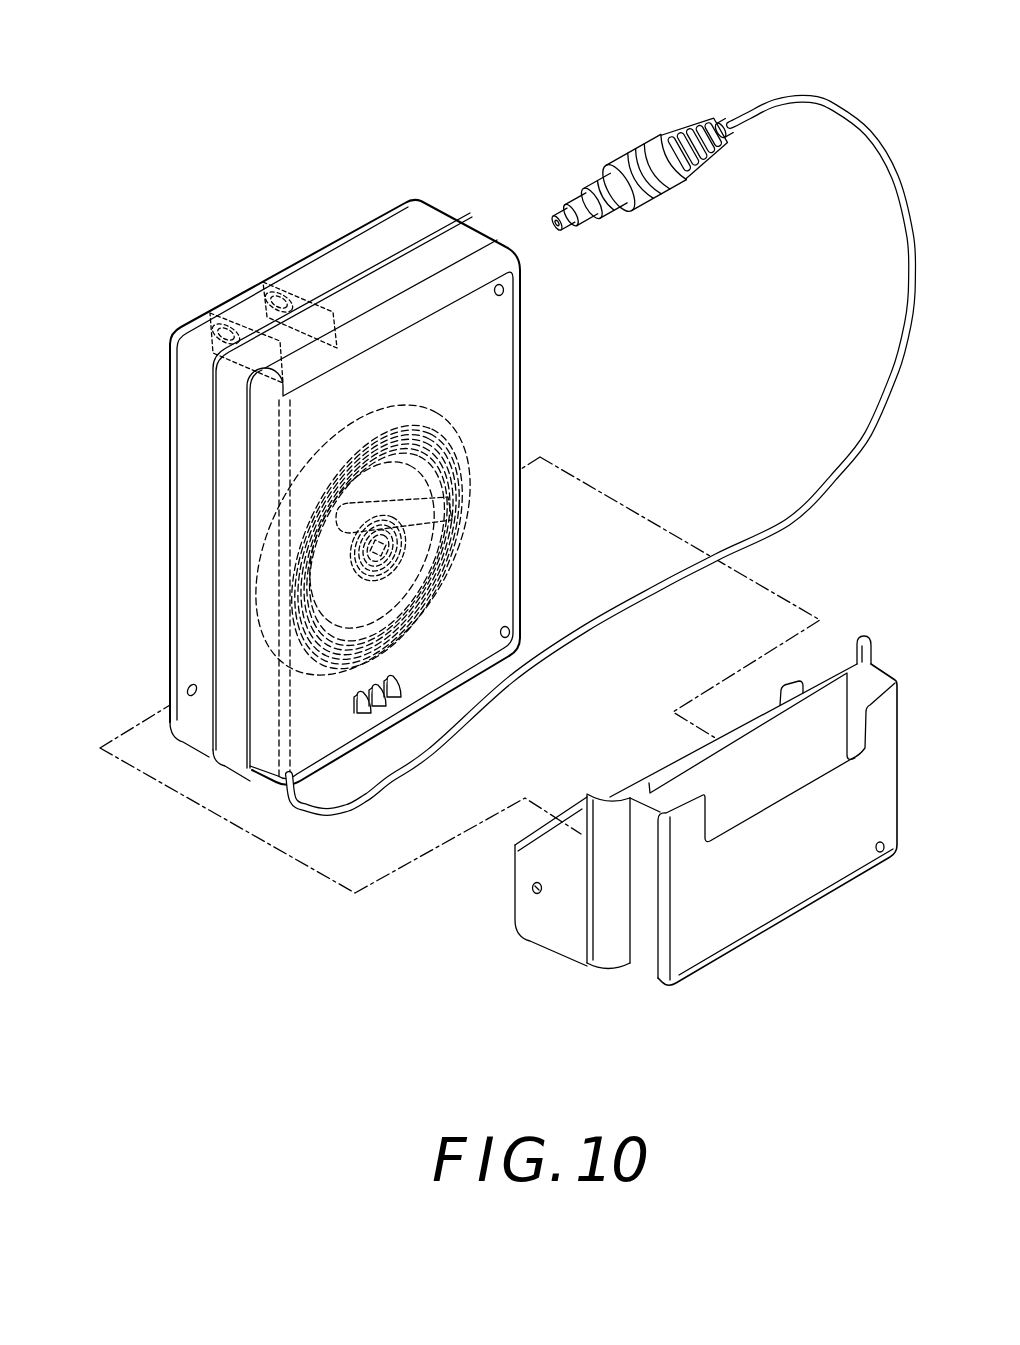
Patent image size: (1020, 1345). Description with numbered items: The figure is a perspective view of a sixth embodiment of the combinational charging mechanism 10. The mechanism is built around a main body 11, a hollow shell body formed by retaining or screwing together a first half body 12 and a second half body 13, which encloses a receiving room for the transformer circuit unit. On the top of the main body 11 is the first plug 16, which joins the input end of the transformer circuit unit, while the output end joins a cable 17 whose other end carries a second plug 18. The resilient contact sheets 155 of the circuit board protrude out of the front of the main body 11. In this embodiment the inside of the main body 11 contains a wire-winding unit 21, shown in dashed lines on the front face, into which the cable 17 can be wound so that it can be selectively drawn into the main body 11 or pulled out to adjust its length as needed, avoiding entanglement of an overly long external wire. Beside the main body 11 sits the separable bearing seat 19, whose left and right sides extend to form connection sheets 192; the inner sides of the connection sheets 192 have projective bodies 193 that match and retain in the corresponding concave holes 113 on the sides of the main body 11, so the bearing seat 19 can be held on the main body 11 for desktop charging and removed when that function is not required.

The combinational charging mechanism 10 is at (357, 101).
The main body 11 is at (270, 203).
The first half body 12 is at (330, 262).
The second half body 13 is at (476, 240).
The first plug 16 is at (212, 315).
The cable 17 is at (857, 382).
The second plug 18 is at (652, 148).
The bearing seat 19 is at (767, 907).
The wire-winding unit 21 is at (471, 437).
The concave hole 113 is at (186, 690).
The resilient contact sheet 155 is at (383, 697).
The connection sheet 192 is at (547, 921).
The projective body 193 is at (527, 888).